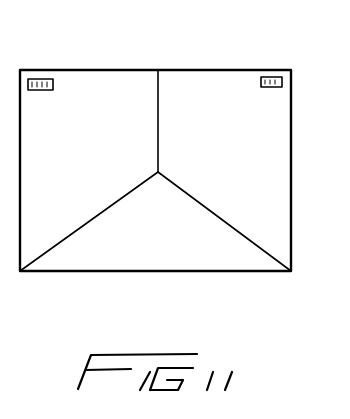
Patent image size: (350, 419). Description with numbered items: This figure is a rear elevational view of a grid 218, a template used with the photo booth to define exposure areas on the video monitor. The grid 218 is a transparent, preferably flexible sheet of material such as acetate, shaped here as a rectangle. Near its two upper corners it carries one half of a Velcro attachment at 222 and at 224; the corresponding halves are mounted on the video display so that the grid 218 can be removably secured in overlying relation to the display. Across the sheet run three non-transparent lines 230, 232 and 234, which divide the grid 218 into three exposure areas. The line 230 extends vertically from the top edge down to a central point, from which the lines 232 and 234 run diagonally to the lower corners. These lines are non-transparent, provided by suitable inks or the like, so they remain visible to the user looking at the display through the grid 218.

The grid 218 is at (223, 59).
The Velcro attachment 222 is at (43, 79).
The Velcro attachment 224 is at (276, 77).
The non-transparent line 230 is at (159, 135).
The non-transparent line 232 is at (213, 208).
The non-transparent line 234 is at (103, 212).